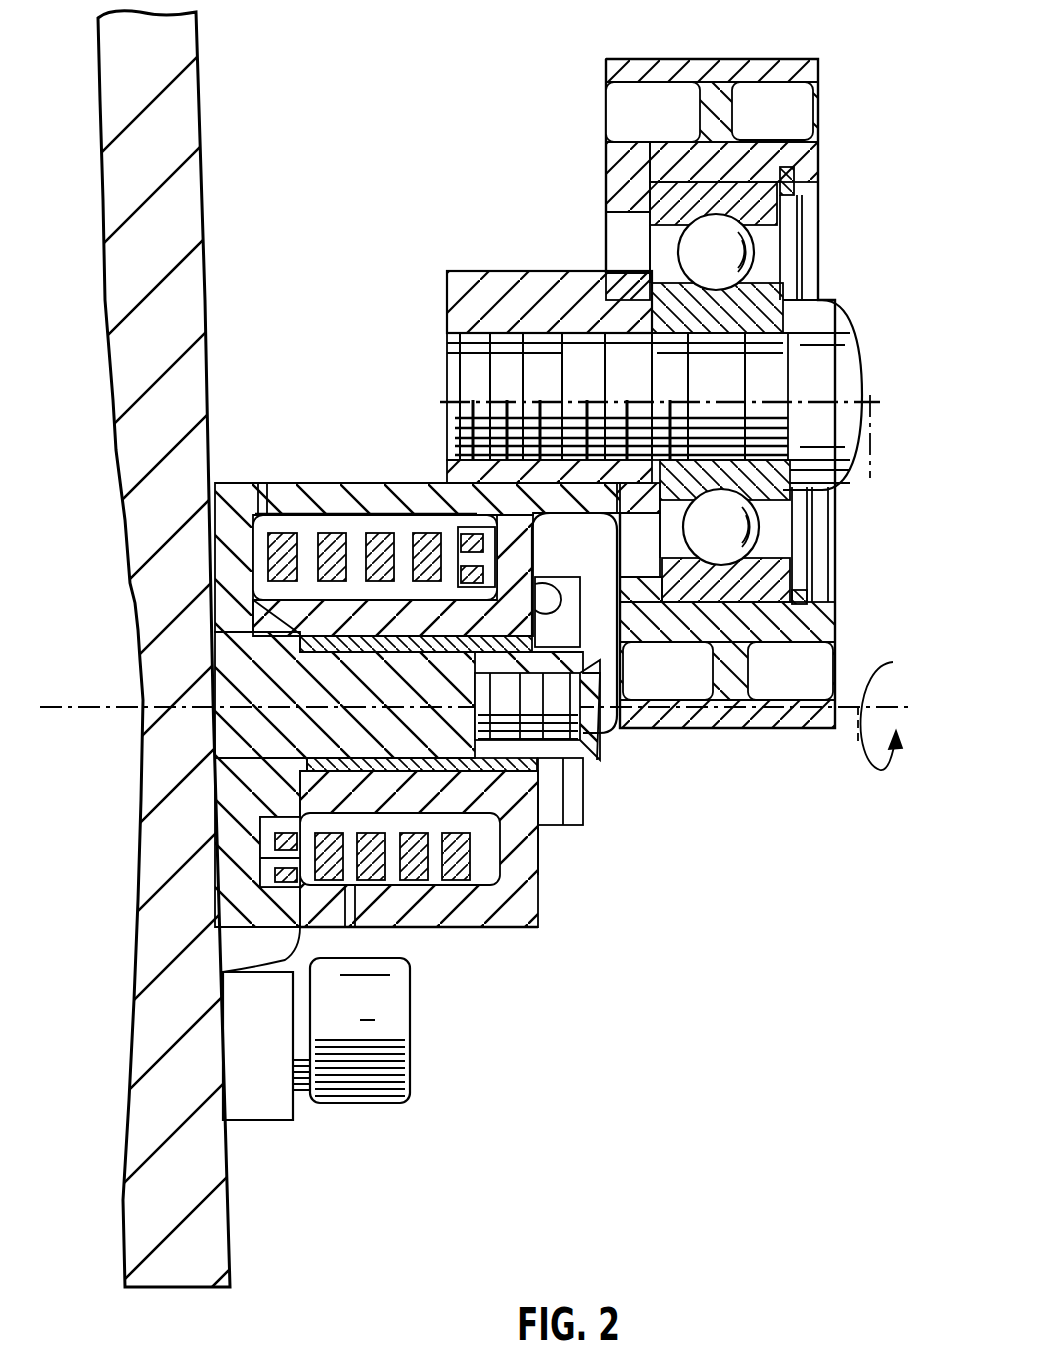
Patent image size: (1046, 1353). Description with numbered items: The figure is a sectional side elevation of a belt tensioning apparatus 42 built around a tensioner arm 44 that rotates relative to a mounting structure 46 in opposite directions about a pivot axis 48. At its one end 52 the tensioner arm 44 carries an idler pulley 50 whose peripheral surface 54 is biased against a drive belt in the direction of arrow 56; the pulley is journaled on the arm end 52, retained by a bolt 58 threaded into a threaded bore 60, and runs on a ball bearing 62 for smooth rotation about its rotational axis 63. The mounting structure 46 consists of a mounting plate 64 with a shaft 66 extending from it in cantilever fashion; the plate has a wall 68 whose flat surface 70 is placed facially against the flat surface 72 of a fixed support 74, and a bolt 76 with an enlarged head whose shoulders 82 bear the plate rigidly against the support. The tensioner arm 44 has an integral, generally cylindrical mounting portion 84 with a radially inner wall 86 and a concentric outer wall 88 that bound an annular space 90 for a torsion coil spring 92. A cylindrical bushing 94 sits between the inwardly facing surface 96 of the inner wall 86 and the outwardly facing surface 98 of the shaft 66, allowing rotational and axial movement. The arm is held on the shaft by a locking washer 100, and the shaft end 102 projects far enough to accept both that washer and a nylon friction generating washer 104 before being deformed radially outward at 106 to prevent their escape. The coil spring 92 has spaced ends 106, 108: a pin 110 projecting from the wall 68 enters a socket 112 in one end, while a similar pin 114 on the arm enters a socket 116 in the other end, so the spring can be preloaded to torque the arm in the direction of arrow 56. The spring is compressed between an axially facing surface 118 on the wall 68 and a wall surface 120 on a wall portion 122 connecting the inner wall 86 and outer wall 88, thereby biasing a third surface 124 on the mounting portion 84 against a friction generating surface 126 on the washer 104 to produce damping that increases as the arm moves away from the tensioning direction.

The belt tensioning apparatus 42 is at (830, 163).
The tensioner arm 44 is at (452, 402).
The mounting structure 46 is at (160, 780).
The pivot axis 48 is at (856, 742).
The idler pulley 50 is at (722, 88).
The arm end 52 is at (545, 271).
The peripheral surface 54 is at (640, 58).
The arrow 56 is at (880, 772).
The bolt 58 is at (836, 338).
The threaded bore 60 is at (490, 340).
The ball bearing 62 is at (746, 203).
The rotational axis 63 is at (874, 452).
The mounting plate 64 is at (228, 545).
The shaft 66 is at (360, 675).
The wall 68 is at (235, 742).
The flat surface 70 is at (215, 877).
The flat surface 72 is at (232, 1210).
The fixed support 74 is at (225, 985).
The bolt 76 is at (390, 1030).
The shoulders 82 is at (292, 1075).
The mounting portion 84 is at (540, 928).
The inner wall 86 is at (505, 876).
The outer wall 88 is at (473, 908).
The annular space 90 is at (335, 528).
The torsion coil spring 92 is at (312, 535).
The cylindrical bushing 94 is at (580, 818).
The radially inwardly facing surface 96 is at (305, 762).
The radially outwardly facing surface 98 is at (300, 637).
The locking washer 100 is at (585, 805).
The shaft end 102 is at (600, 738).
The friction generating washer 104 is at (541, 580).
The deformed portion / spring end 106 is at (335, 920).
The spring end 108 is at (412, 522).
The pin 110 is at (262, 880).
The socket 112 is at (240, 910).
The pin 114 is at (452, 527).
The socket 116 is at (402, 522).
The axially facing surface 118 is at (260, 828).
The wall surface 120 is at (522, 888).
The wall portion 122 is at (540, 860).
The third surface 124 is at (540, 836).
The friction generating surface 126 is at (553, 600).